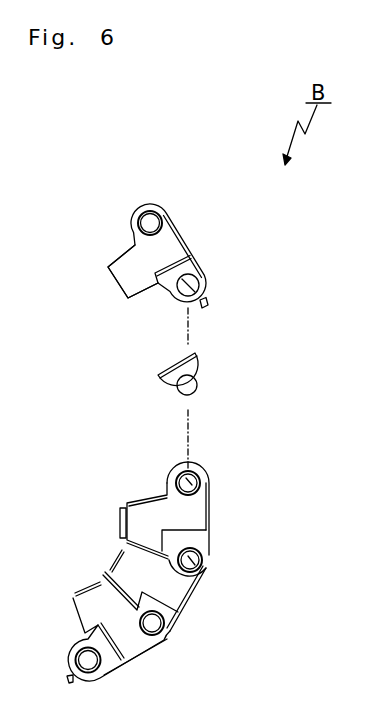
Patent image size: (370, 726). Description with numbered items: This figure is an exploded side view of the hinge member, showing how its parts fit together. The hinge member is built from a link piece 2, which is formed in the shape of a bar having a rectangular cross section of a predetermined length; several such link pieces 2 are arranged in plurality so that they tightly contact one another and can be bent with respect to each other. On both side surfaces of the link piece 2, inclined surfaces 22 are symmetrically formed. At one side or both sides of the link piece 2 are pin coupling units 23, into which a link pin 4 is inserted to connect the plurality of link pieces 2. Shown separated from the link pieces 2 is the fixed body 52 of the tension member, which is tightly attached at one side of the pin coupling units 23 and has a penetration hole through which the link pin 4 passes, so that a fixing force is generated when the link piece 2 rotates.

The link piece 2 is at (187, 236).
The link pin 4 is at (205, 303).
The inclined surfaces 22 is at (121, 256).
The pin coupling unit 23 is at (207, 274).
The fixed body 52 is at (209, 380).